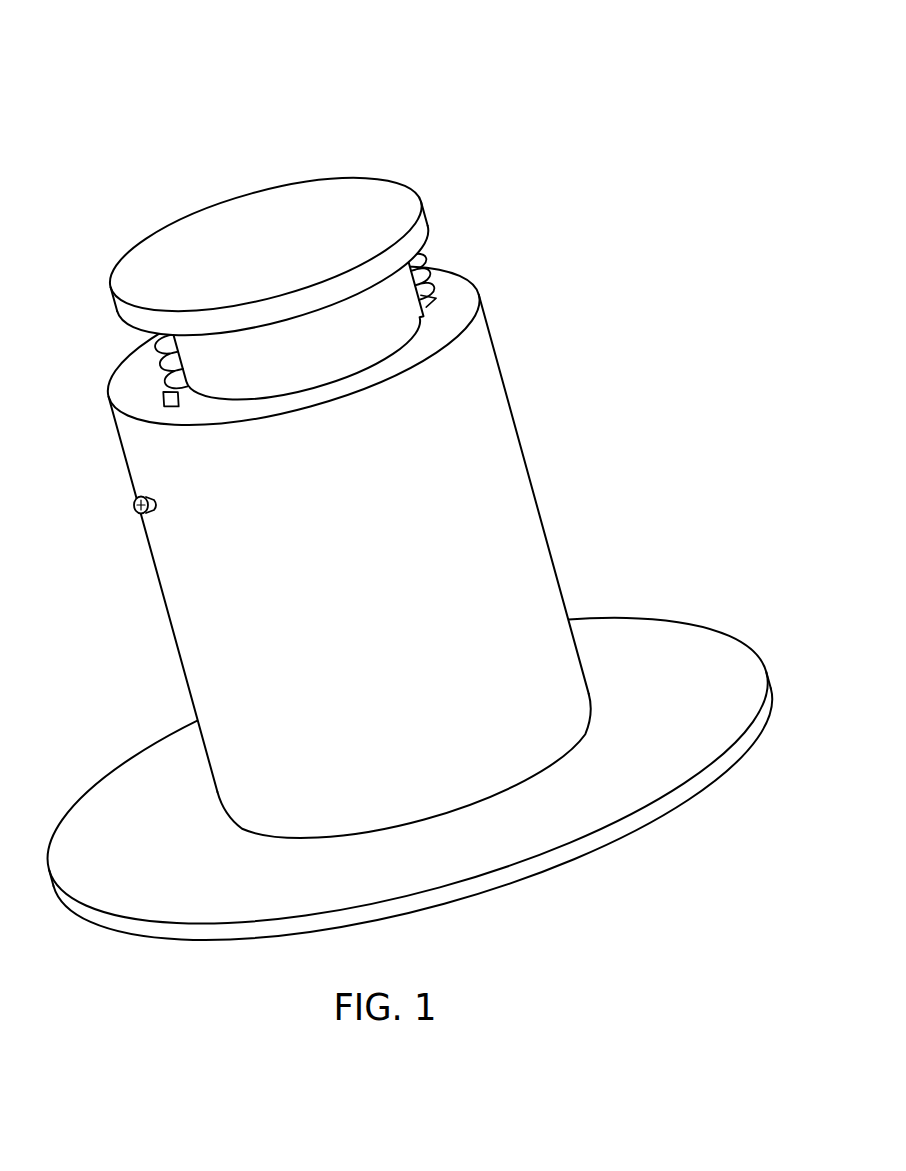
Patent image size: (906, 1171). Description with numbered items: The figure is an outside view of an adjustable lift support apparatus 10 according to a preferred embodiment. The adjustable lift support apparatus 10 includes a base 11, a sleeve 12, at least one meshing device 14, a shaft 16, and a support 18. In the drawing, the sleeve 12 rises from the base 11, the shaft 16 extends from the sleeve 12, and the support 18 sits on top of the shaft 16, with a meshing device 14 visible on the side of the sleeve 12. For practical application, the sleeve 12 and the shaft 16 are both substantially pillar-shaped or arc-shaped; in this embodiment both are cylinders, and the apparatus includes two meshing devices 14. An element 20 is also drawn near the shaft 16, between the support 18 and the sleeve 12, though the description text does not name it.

The adjustable lift support apparatus 10 is at (410, 504).
The base 11 is at (652, 620).
The sleeve 12 is at (531, 470).
The meshing device 14 is at (134, 507).
The shaft 16 is at (374, 321).
The support 18 is at (188, 214).
The spring 20 is at (140, 355).